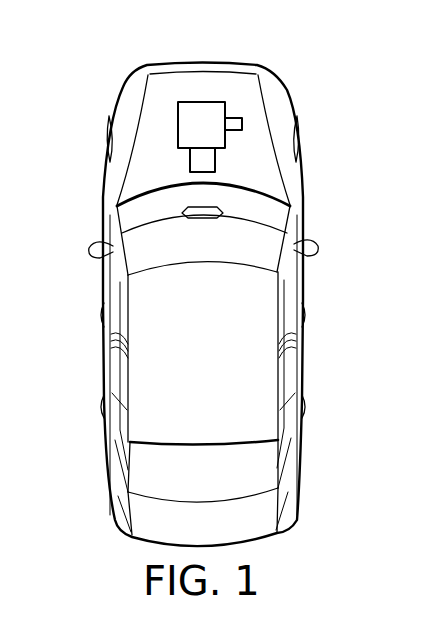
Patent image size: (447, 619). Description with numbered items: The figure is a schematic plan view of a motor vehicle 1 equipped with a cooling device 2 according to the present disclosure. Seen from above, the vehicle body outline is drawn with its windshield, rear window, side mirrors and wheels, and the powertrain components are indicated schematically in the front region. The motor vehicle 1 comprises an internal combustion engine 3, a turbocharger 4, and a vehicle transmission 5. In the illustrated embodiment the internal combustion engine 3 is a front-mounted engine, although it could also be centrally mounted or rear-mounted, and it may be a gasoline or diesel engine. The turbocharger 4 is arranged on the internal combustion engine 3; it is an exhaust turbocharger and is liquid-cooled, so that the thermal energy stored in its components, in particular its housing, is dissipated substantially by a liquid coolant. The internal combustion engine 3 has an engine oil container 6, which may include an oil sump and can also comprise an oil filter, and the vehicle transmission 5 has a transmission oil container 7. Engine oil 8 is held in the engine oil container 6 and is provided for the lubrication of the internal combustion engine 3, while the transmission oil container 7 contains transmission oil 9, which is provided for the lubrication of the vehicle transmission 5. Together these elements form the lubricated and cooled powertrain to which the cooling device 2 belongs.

The motor vehicle 1 is at (306, 343).
The cooling device 2 is at (242, 105).
The internal combustion engine 3 is at (192, 130).
The turbocharger 4 is at (243, 125).
The vehicle transmission 5 is at (205, 160).
The engine oil container 6 is at (168, 112).
The transmission oil container 7 is at (177, 157).
The engine oil 8 is at (188, 94).
The transmission oil 9 is at (197, 184).